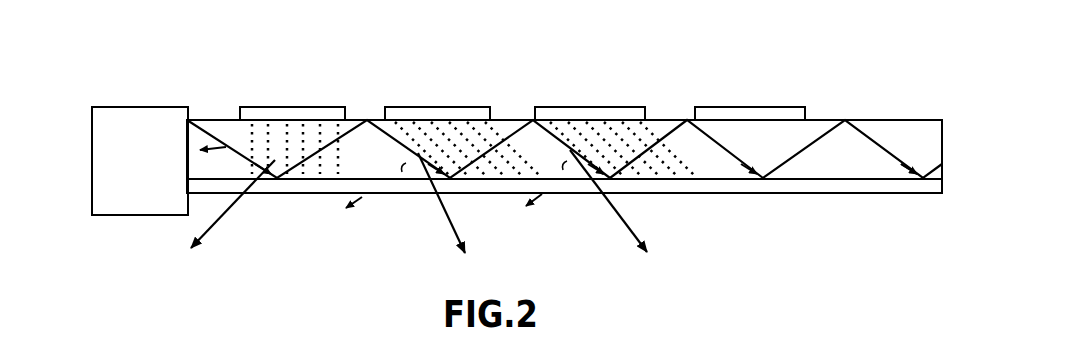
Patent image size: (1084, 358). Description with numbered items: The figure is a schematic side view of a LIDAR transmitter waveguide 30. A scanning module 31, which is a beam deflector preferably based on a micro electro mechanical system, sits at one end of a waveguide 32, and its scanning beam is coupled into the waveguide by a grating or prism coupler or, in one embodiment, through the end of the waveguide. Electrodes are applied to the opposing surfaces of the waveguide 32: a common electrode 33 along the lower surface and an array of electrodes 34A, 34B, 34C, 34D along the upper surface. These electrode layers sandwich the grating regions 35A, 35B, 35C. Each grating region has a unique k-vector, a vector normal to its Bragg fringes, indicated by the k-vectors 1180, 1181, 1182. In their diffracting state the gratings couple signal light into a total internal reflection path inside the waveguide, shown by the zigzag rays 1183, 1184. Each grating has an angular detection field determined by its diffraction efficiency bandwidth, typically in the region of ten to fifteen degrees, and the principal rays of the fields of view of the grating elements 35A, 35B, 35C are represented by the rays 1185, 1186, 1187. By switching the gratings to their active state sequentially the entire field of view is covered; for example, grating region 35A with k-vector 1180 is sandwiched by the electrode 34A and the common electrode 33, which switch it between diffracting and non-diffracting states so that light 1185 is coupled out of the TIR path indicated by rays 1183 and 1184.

The LIDAR transmitter waveguide 30 is at (852, 25).
The scanning module 31 is at (110, 106).
The waveguide 32 is at (873, 118).
The common electrode 33 is at (787, 195).
The electrode 34A is at (280, 106).
The electrode 34B is at (415, 106).
The electrode 34C is at (585, 106).
The electrode 34D is at (715, 106).
The grating region 35A is at (313, 182).
The grating region 35B is at (507, 182).
The grating region 35C is at (675, 168).
The k-vector 1180 is at (222, 148).
The k-vector 1181 is at (369, 209).
The k-vector 1182 is at (542, 213).
The ray 1183 is at (265, 84).
The ray 1184 is at (907, 173).
The principal ray 1185 is at (205, 226).
The principal ray 1186 is at (452, 237).
The principal ray 1187 is at (634, 240).